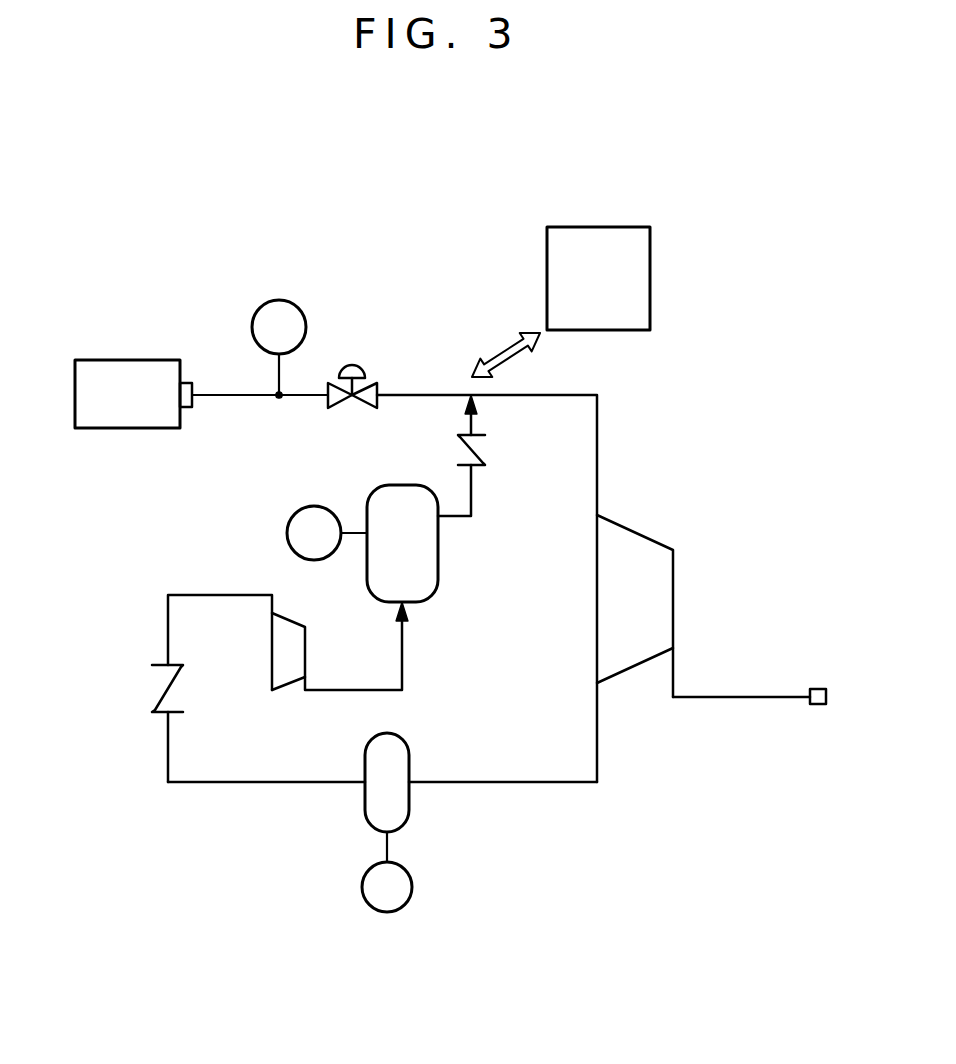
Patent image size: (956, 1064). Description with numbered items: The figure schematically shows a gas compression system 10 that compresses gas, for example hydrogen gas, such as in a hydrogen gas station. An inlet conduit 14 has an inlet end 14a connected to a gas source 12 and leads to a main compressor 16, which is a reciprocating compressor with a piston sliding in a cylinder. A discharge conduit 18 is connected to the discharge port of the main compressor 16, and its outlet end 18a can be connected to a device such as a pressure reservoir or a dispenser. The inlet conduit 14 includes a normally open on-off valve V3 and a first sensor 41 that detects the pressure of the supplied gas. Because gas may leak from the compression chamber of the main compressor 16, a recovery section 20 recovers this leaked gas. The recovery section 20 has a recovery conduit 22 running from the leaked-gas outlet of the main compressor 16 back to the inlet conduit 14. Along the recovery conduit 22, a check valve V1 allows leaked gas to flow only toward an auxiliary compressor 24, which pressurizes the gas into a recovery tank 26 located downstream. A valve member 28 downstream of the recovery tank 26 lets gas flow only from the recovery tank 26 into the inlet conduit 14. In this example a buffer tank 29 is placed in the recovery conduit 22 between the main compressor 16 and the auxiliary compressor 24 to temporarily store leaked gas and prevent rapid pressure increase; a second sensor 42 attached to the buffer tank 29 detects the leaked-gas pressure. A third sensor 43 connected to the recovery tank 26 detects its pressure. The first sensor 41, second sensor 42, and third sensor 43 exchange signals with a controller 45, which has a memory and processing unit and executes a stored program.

The gas compression system 10 is at (178, 283).
The gas source 12 is at (132, 430).
The inlet conduit 14 is at (532, 393).
The inlet end 14a is at (188, 377).
The main compressor 16 is at (637, 530).
The discharge conduit 18 is at (735, 697).
The outlet end 18a is at (815, 707).
The recovery section 20 is at (607, 816).
The recovery conduit 22 is at (300, 795).
The auxiliary compressor 24 is at (272, 660).
The recovery tank 26 is at (440, 567).
The valve member 28 is at (475, 465).
The buffer tank 29 is at (400, 737).
The first sensor 41 is at (291, 302).
The second sensor 42 is at (397, 910).
The third sensor 43 is at (314, 504).
The controller 45 is at (618, 227).
The valve member V1 is at (153, 712).
The on-off valve V3 is at (376, 385).